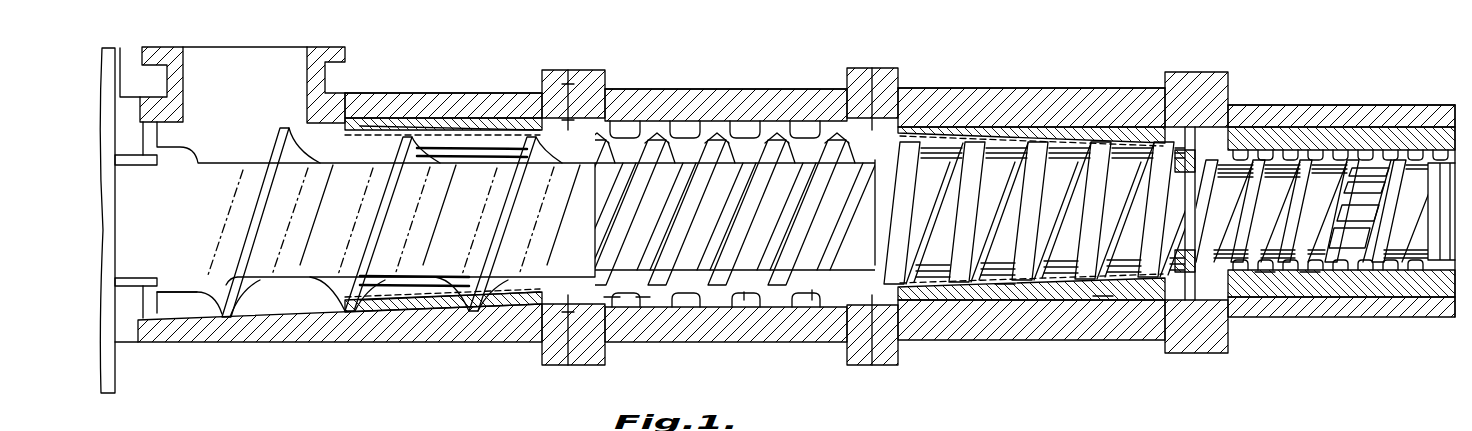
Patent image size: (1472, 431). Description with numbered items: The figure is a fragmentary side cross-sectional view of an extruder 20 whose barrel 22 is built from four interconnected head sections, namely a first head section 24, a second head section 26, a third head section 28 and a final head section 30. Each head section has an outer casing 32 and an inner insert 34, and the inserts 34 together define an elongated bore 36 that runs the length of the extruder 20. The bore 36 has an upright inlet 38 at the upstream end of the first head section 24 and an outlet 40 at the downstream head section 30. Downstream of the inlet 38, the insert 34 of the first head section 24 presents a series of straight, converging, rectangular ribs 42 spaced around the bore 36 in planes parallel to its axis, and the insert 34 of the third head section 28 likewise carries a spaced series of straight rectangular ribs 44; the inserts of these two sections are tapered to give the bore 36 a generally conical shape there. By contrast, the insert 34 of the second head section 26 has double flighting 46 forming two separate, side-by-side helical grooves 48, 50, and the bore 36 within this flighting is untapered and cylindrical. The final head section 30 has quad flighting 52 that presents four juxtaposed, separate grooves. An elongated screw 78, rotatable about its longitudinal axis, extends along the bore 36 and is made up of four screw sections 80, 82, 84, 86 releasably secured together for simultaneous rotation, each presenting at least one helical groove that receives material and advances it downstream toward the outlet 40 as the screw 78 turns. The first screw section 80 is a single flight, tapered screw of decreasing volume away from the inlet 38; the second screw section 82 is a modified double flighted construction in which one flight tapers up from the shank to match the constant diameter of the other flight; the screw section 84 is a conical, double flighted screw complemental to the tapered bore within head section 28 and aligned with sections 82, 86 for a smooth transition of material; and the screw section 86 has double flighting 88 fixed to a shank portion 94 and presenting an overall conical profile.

The extruder 20 is at (888, 34).
The barrel 22 is at (776, 70).
The first head section 24 is at (430, 90).
The second head section 26 is at (682, 90).
The third head section 28 is at (1000, 88).
The final head section 30 is at (1276, 105).
The outer casing 32 is at (357, 96).
The inner insert 34 is at (470, 312).
The bore 36 is at (799, 219).
The inlet 38 is at (238, 62).
The outlet 40 is at (1455, 150).
The ribs 42 is at (487, 130).
The ribs 44 is at (1062, 135).
The double flighting 46 is at (624, 118).
The groove 48 is at (610, 300).
The groove 50 is at (650, 296).
The quad flighting 52 is at (1236, 118).
The screw 78 is at (742, 298).
The first screw section 80 is at (192, 303).
The second screw section 82 is at (812, 292).
The third screw section 84 is at (1005, 288).
The fourth screw section 86 is at (1263, 290).
The double flighting 88 is at (1310, 278).
The shank portion 94 is at (1103, 300).